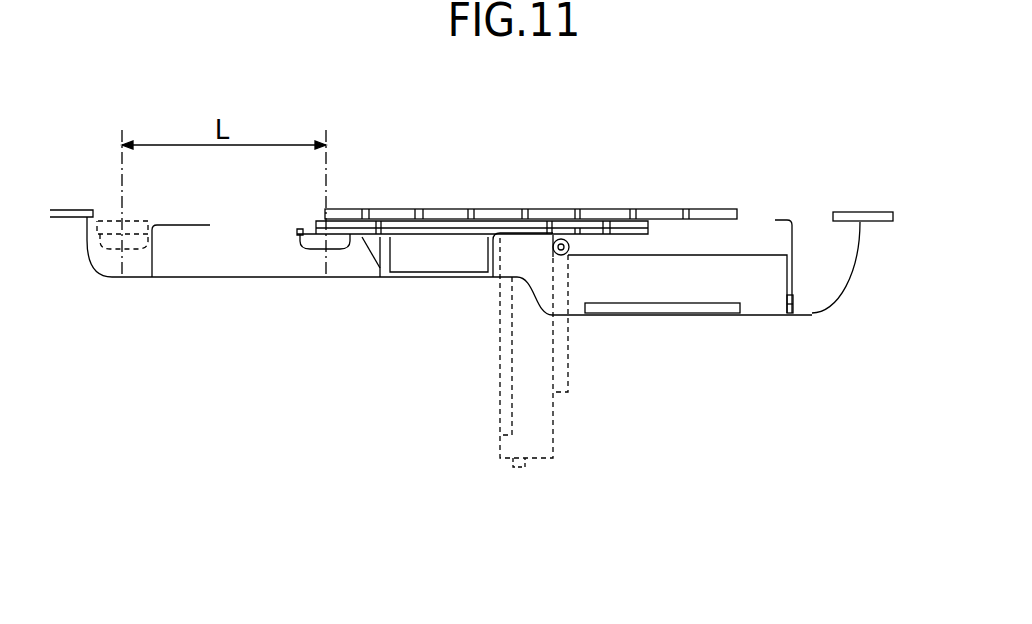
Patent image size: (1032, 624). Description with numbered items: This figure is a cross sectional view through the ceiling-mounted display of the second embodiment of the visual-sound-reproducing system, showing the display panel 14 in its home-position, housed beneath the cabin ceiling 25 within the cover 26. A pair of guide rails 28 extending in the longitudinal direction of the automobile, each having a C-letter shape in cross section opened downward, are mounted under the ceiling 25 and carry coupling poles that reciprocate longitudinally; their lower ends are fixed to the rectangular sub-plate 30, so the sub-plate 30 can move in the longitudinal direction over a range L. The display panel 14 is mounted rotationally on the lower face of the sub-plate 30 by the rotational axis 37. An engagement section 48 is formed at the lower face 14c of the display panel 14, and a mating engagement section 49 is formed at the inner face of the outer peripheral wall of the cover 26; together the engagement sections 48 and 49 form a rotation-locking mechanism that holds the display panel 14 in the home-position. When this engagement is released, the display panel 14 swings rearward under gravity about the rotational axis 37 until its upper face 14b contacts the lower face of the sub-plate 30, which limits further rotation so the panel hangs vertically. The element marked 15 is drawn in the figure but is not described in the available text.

The display panel 14 is at (715, 308).
The upper face 14b is at (512, 226).
The lower face 14c is at (540, 461).
The carriage base 15 is at (380, 257).
The ceiling 25 is at (862, 212).
The cover 26 is at (857, 256).
The guide rails 28 is at (716, 215).
The sub-plate 30 is at (456, 228).
The rotational axis 37 is at (562, 238).
The engagement section 48 is at (795, 270).
The engagement section 49 is at (790, 313).